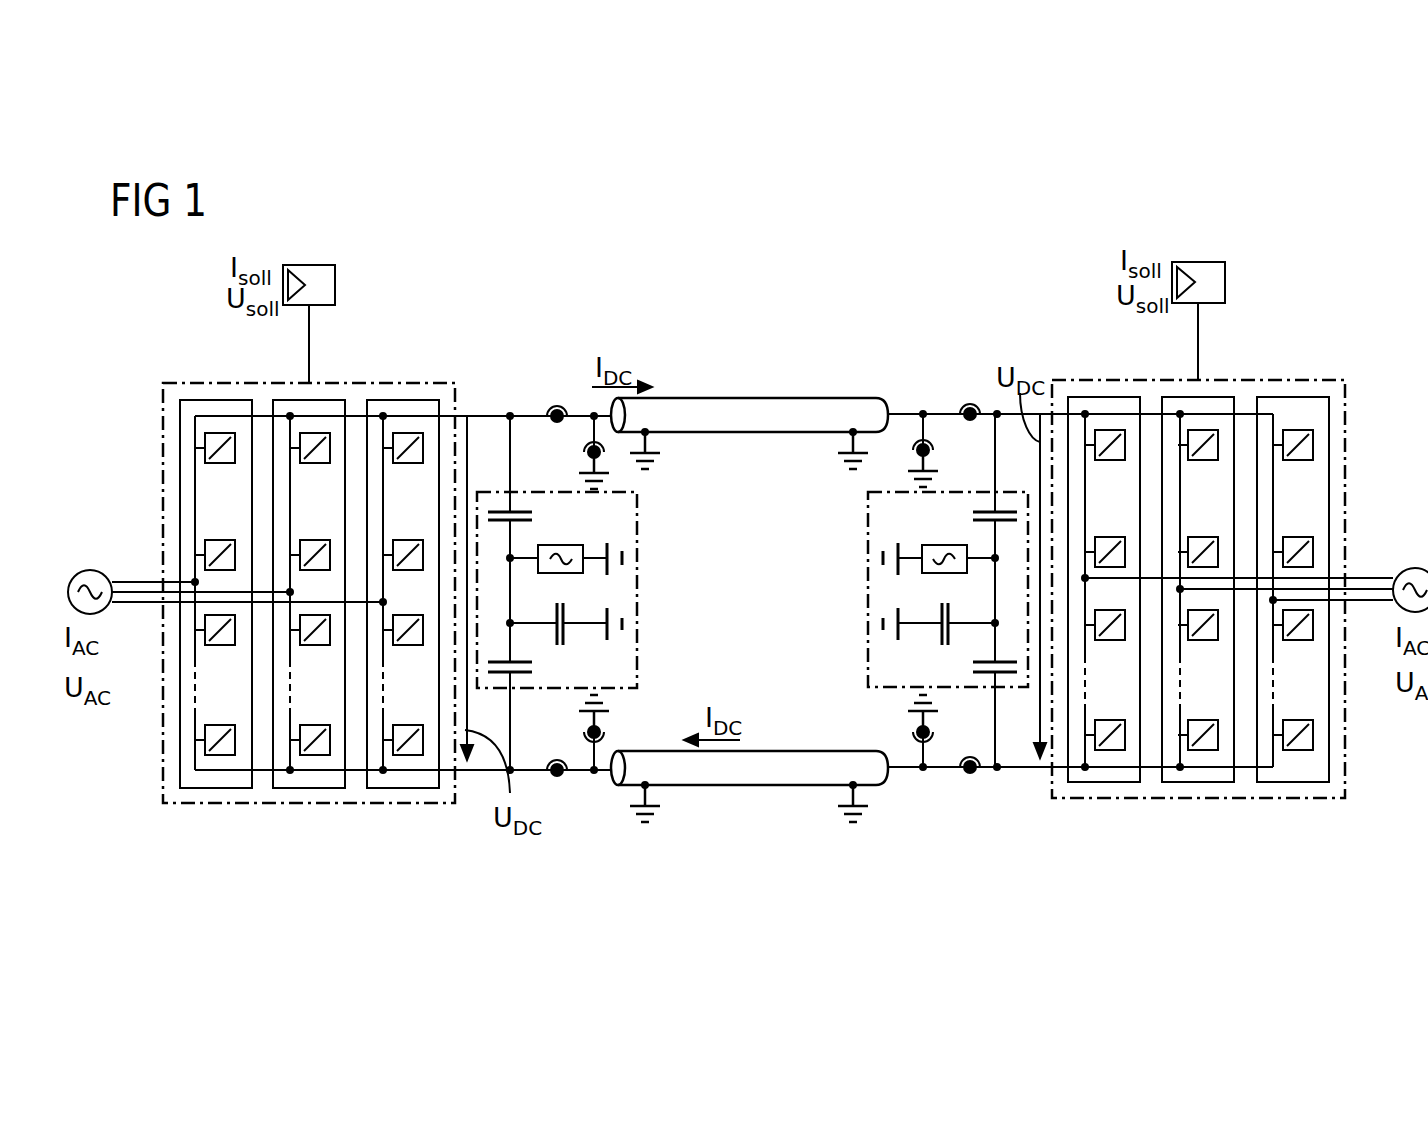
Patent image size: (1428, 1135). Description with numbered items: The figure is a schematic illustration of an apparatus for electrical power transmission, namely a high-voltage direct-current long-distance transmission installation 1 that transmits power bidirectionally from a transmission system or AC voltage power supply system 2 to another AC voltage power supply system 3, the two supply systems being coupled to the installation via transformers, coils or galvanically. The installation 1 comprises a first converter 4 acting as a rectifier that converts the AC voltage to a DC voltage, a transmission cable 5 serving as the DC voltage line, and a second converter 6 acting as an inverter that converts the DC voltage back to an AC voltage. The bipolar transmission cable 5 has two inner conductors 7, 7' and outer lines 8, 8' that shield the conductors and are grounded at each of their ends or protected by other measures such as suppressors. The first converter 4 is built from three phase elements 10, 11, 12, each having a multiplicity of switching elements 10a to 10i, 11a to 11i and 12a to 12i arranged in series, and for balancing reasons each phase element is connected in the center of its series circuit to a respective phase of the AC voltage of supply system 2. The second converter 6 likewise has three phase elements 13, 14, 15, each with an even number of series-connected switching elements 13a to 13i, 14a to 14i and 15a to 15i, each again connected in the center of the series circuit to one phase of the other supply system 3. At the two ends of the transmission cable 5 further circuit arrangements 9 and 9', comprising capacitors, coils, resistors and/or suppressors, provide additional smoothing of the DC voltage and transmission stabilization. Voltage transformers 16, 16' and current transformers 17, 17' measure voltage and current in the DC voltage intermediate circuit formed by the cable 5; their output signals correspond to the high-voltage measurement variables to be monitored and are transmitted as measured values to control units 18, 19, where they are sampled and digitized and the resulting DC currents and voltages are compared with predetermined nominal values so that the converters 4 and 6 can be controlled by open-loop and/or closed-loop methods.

The HVDC installation 1 is at (1364, 372).
The AC voltage power supply system 2 is at (93, 570).
The AC voltage power supply system 3 is at (1412, 568).
The first converter 4 is at (163, 395).
The transmission cable 5 is at (694, 396).
The second converter 6 is at (1052, 380).
The inner conductor 7 is at (551, 384).
The inner conductor 7' is at (556, 802).
The outer line 8 is at (806, 360).
The outer line 8' is at (749, 806).
The circuit arrangement 9 is at (580, 593).
The circuit arrangement 9' is at (918, 593).
The phase element 10 is at (228, 605).
The switching element 10a is at (222, 433).
The switching element 10i is at (227, 757).
The phase element 11 is at (318, 605).
The switching element 11a is at (320, 433).
The switching element 11i is at (315, 757).
The phase element 12 is at (411, 604).
The switching element 12a is at (413, 433).
The switching element 12i is at (408, 757).
The phase element 13 is at (1112, 601).
The switching element 13a is at (1108, 430).
The switching element 13i is at (1102, 752).
The phase element 14 is at (1211, 606).
The switching element 14a is at (1208, 430).
The switching element 14i is at (1200, 752).
The phase element 15 is at (1310, 600).
The switching element 15a is at (1300, 430).
The switching element 15i is at (1297, 752).
The voltage transformer 16 is at (764, 451).
The voltage transformer 16' is at (758, 766).
The current transformer 17 is at (763, 371).
The current transformer 17' is at (765, 820).
The control unit 18 is at (335, 278).
The control unit 19 is at (1225, 278).